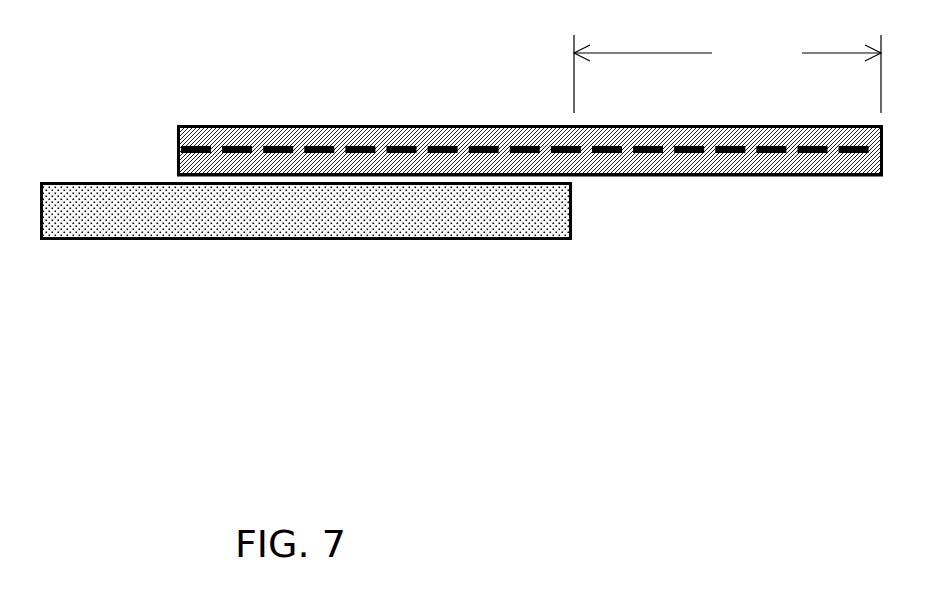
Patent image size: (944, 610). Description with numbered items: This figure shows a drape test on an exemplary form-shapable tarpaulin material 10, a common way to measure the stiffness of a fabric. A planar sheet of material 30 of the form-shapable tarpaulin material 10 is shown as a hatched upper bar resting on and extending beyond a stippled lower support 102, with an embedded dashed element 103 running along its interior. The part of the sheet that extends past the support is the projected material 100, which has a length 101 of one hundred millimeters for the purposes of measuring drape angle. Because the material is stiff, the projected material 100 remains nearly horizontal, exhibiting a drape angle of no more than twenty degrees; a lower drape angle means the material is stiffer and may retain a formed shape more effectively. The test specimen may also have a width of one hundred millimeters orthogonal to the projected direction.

The form-shapable tarpaulin material 10 is at (631, 202).
The planar sheet of material 30 is at (798, 176).
The projected material 100 is at (863, 176).
The length 101 is at (727, 74).
The lower support element 102 is at (462, 213).
The embedded dashed element 103 is at (343, 143).